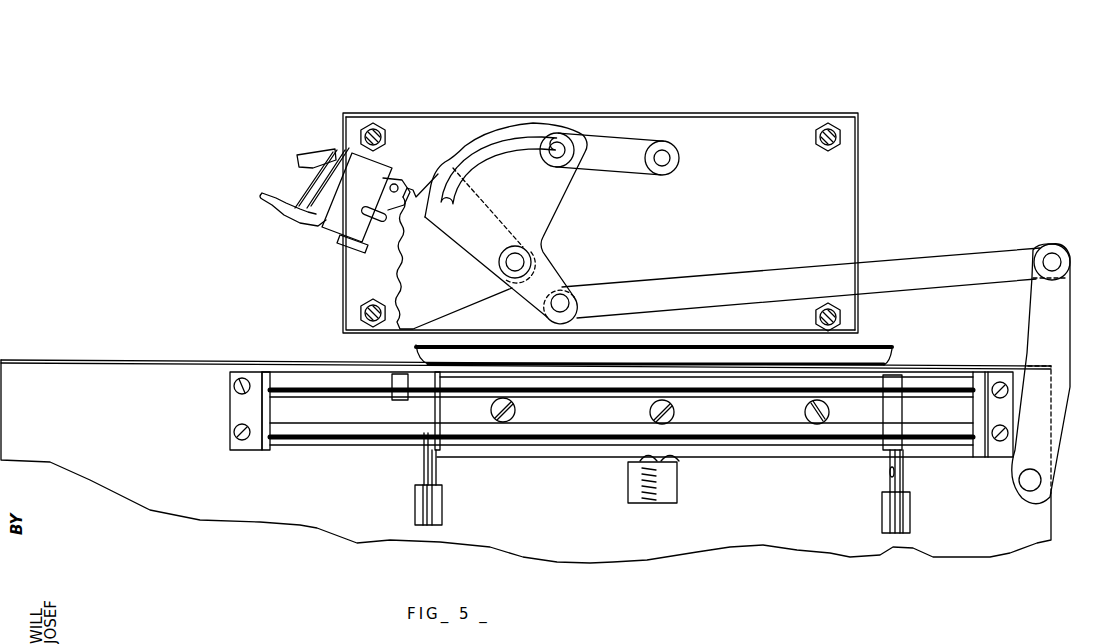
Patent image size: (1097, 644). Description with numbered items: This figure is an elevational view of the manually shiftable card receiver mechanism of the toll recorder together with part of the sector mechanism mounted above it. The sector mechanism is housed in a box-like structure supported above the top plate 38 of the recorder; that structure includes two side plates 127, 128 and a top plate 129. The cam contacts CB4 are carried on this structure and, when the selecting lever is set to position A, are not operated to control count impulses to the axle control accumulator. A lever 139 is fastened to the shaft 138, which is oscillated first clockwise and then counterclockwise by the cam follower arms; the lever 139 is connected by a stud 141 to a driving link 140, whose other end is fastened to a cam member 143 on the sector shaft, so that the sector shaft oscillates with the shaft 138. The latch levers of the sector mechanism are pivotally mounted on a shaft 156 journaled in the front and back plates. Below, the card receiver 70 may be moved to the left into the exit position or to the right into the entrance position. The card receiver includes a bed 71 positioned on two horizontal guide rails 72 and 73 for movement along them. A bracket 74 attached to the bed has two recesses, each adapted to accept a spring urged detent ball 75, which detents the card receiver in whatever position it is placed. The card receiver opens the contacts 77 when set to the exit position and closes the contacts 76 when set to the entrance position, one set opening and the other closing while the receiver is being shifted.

The cam contacts CB4 is at (293, 157).
The top plate 129 is at (620, 114).
The side plate 127 is at (858, 235).
The side plate 128 is at (342, 315).
The cam member 143 is at (522, 262).
The shaft 156 is at (664, 157).
The driving link 140 is at (913, 257).
The stud 141 is at (1047, 253).
The lever 139 is at (1037, 318).
The shaft 138 is at (1020, 480).
The top plate 38 is at (227, 363).
The card receiver 70 is at (621, 419).
The bed 71 is at (690, 369).
The guide rail 72 is at (330, 392).
The guide rail 73 is at (327, 440).
The bracket 74 is at (578, 455).
The detent ball 75 is at (647, 457).
The contacts 76 is at (890, 430).
The contacts 77 is at (438, 465).